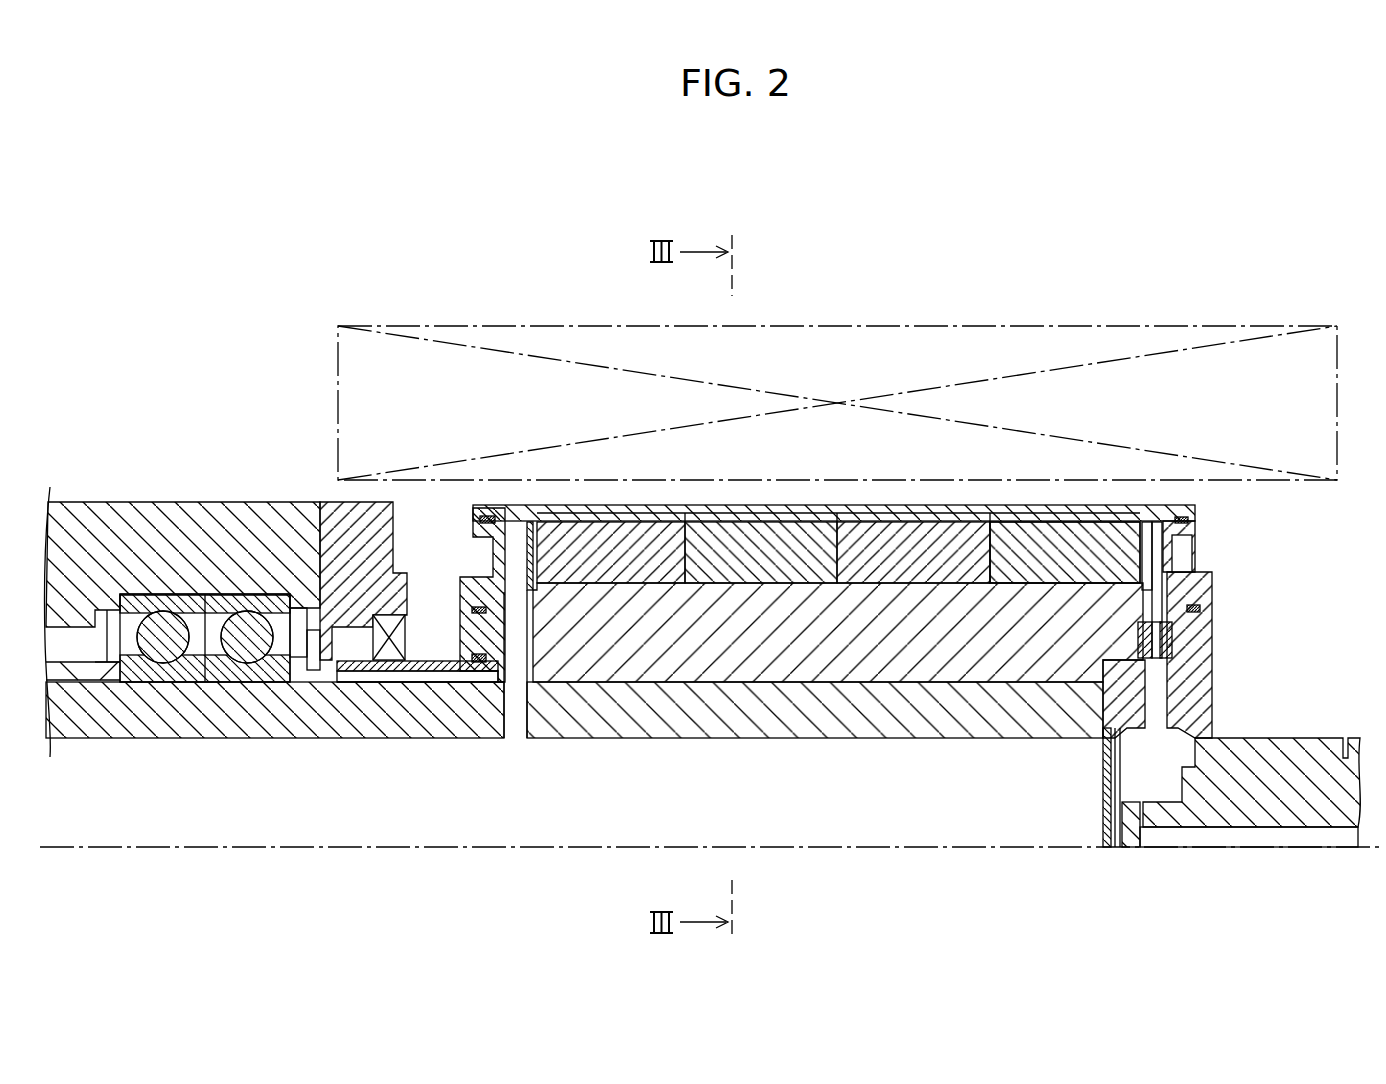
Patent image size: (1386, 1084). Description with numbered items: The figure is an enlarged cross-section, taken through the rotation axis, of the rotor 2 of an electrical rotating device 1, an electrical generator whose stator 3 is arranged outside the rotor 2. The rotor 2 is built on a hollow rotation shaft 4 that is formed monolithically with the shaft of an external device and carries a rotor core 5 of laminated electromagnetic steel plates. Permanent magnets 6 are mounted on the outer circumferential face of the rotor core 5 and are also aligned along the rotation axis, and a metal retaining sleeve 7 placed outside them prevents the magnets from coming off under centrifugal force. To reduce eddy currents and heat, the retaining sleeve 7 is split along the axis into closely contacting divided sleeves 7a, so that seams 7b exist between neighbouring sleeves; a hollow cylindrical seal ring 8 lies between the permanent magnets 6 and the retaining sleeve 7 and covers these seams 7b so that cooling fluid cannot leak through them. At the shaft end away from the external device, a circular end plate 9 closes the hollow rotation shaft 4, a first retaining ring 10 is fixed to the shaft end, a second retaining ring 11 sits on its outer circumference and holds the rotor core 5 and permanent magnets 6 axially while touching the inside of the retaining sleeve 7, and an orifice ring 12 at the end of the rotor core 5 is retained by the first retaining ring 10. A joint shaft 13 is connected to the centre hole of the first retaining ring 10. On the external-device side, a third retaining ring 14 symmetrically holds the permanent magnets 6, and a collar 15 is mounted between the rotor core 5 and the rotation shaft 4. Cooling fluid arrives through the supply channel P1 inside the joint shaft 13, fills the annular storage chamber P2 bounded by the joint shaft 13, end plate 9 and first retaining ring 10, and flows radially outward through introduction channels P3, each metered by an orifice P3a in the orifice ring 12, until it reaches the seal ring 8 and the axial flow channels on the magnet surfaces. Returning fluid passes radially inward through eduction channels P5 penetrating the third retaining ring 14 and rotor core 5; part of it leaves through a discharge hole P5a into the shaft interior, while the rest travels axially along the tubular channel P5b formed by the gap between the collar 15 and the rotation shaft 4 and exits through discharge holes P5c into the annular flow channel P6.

The electrical rotating device 1 is at (917, 295).
The rotor 2 is at (1253, 556).
The stator 3 is at (1090, 337).
The rotation shaft 4 is at (804, 726).
The rotor core 5 is at (680, 690).
The permanent magnets 6 is at (1013, 545).
The retaining sleeve 7 is at (828, 521).
The divided sleeves 7a is at (1108, 513).
The seams 7b is at (1058, 513).
The seal ring 8 is at (723, 521).
The end plate 9 is at (1101, 806).
The first retaining ring 10 is at (1213, 674).
The second retaining ring 11 is at (1196, 524).
The orifice ring 12 is at (1173, 642).
The joint shaft 13 is at (1313, 797).
The third retaining ring 14 is at (472, 514).
The collar 15 is at (437, 661).
The supply channel P1 is at (1228, 837).
The storage chamber P2 is at (1163, 790).
The introduction channels P3 is at (1157, 583).
The orifice P3a is at (1150, 632).
The eduction channels P5 is at (517, 553).
The discharge hole P5a is at (518, 730).
The tubular channel P5b is at (397, 677).
The discharge holes P5c is at (355, 685).
The annular flow channel P6 is at (352, 645).